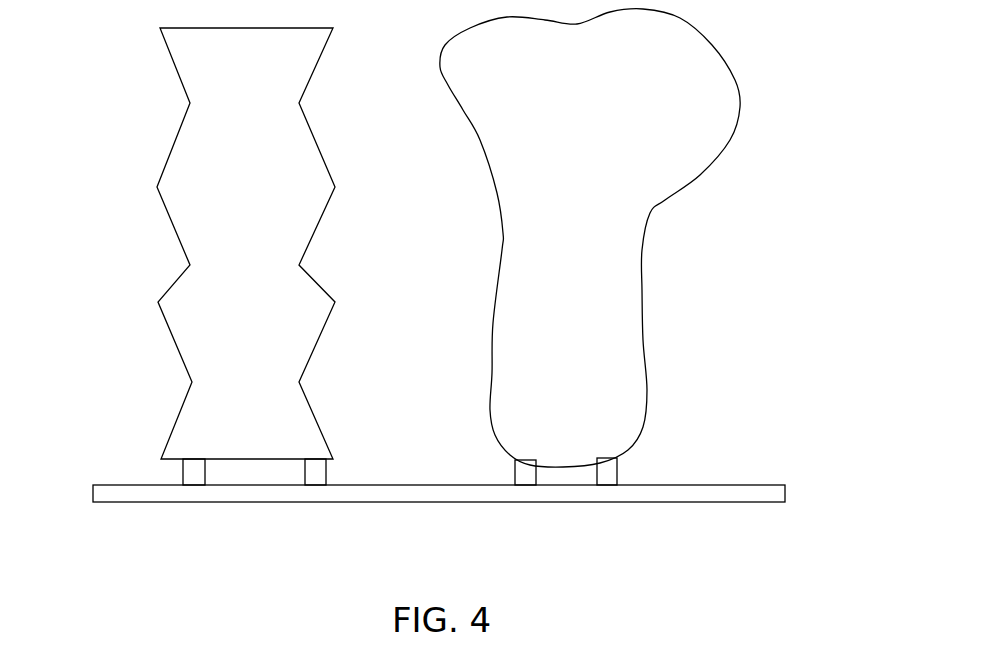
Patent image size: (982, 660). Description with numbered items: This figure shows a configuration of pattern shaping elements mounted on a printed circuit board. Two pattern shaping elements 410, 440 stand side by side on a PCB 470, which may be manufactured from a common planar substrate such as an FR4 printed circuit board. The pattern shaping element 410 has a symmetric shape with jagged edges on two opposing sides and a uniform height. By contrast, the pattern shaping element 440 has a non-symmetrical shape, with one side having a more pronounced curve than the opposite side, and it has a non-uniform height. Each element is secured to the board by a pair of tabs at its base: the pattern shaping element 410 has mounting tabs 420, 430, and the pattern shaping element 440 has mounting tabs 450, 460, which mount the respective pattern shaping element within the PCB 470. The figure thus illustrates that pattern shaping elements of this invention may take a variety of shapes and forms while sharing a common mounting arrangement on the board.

The pattern shaping element 410 is at (180, 302).
The mounting tab 420 is at (195, 473).
The mounting tab 430 is at (318, 470).
The pattern shaping element 440 is at (632, 310).
The mounting tab 450 is at (530, 473).
The mounting tab 460 is at (618, 470).
The PCB 470 is at (642, 492).